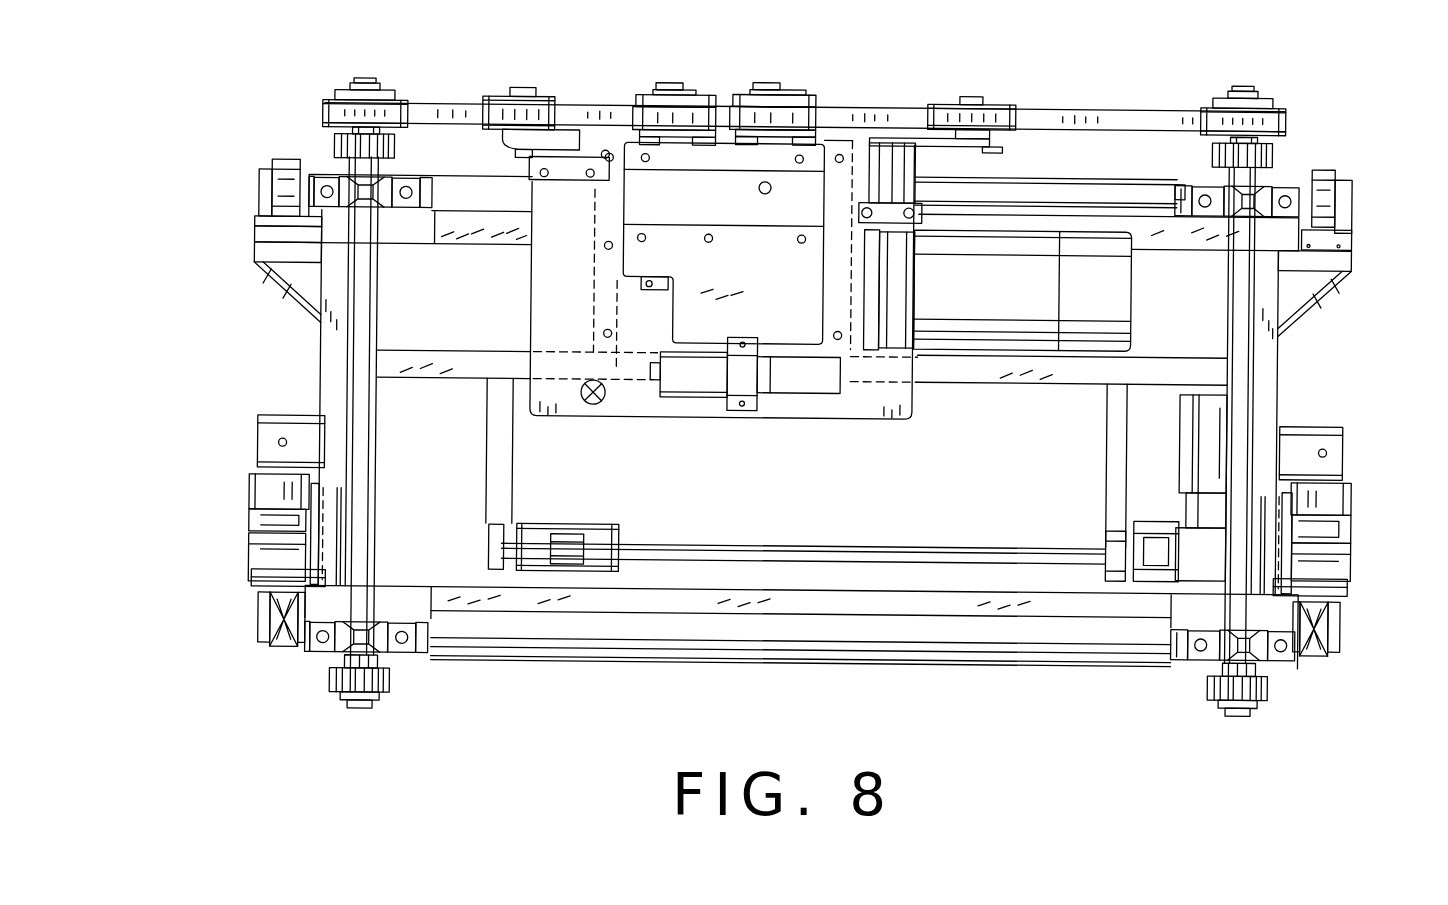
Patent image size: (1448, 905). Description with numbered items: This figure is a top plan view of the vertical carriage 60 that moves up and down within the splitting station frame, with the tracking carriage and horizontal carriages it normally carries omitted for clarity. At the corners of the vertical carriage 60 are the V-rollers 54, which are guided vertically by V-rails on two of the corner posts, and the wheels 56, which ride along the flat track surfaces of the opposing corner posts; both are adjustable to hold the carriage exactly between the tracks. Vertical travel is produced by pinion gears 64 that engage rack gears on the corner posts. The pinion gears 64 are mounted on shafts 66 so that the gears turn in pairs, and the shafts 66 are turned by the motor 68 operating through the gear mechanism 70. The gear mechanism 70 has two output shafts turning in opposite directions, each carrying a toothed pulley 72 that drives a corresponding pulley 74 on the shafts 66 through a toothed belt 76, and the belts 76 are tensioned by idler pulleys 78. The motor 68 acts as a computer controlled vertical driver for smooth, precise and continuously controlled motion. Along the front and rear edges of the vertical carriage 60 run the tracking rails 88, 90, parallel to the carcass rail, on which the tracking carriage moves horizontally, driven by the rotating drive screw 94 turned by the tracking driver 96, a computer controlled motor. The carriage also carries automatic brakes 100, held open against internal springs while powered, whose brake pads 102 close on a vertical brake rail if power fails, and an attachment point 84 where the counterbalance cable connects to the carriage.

The V-rollers 54 is at (290, 651).
The wheels 56 is at (282, 173).
The vertical carriage 60 is at (240, 360).
The pinion gears 64 is at (332, 146).
The shafts 66 is at (360, 327).
The motor 68 is at (1002, 296).
The gear mechanism 70 is at (723, 205).
The toothed pulleys 72 is at (636, 97).
The pulleys 74 is at (331, 94).
The toothed belts 76 is at (432, 108).
The idler pulleys 78 is at (542, 100).
The attachment point 84 is at (280, 443).
The tracking rail 88 is at (853, 638).
The tracking rail 90 is at (1070, 181).
The drive screw 94 is at (888, 545).
The tracking driver 96 is at (1160, 500).
The automatic brakes 100 is at (260, 490).
The brake pads 102 is at (1393, 545).